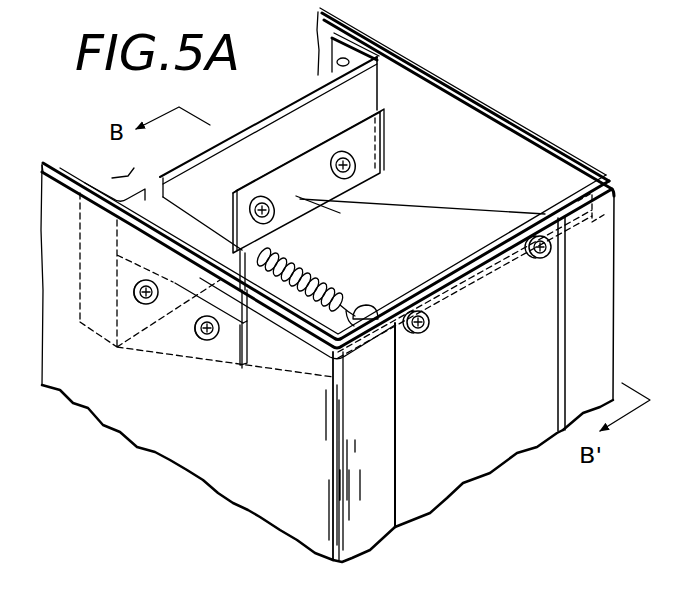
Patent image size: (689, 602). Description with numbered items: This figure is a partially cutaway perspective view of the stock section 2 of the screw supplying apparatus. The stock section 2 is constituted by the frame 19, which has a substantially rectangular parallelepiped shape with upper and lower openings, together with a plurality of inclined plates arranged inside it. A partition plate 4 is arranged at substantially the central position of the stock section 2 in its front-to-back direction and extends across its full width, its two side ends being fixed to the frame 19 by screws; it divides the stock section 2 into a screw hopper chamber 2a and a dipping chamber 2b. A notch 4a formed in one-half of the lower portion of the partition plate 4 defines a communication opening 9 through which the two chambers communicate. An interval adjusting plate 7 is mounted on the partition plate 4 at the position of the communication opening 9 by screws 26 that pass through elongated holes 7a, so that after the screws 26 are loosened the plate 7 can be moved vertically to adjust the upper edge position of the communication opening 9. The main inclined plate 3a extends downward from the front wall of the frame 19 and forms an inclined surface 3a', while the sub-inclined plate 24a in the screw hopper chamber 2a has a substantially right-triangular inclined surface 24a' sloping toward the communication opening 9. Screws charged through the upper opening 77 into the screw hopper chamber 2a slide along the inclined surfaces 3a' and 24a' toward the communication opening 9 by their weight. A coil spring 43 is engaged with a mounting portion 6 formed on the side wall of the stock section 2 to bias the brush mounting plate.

The stock section 2 is at (548, 123).
The screw hopper chamber 2a is at (311, 320).
The dipping chamber 2b is at (313, 70).
The main inclined plate 3a is at (472, 275).
The inclined surface 3a' is at (477, 284).
The partition plate 4 is at (365, 88).
The notch 4a is at (337, 213).
The mounting portion 6 is at (373, 310).
The interval adjusting plate 7 is at (292, 178).
The elongated holes 7a is at (345, 148).
The communication opening 9 is at (350, 207).
The frame 19 is at (503, 110).
The sub-inclined plate 24a is at (206, 293).
The inclined surface 24a' is at (270, 353).
The screws 26 is at (350, 168).
The biasing means (coil spring) 43 is at (308, 268).
The upper opening 77 is at (430, 267).